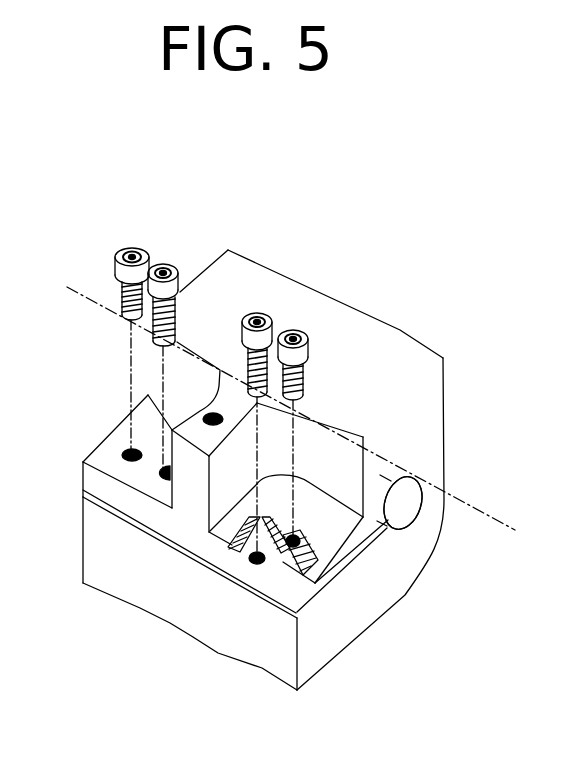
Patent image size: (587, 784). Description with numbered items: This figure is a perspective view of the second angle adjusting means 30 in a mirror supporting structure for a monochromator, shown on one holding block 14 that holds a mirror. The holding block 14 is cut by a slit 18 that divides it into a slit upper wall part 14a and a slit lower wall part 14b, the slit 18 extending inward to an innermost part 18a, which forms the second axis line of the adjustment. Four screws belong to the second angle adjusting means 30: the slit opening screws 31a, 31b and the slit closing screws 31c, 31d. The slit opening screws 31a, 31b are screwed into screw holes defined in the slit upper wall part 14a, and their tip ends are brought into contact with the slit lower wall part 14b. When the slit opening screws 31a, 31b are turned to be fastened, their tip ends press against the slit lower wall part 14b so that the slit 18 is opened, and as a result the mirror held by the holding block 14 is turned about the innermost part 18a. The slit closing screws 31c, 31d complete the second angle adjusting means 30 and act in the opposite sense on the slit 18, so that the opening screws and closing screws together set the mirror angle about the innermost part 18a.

The holding block 14 is at (242, 280).
The slit upper wall part 14a is at (84, 462).
The slit lower wall part 14b is at (138, 583).
The slit 18 is at (410, 508).
The innermost part (second axis line) 18a is at (428, 484).
The second angle adjusting means 30 is at (226, 212).
The slit opening screw 31a is at (303, 330).
The slit opening screw 31b is at (122, 296).
The slit closing screw 31c is at (270, 317).
The slit closing screw 31d is at (170, 263).